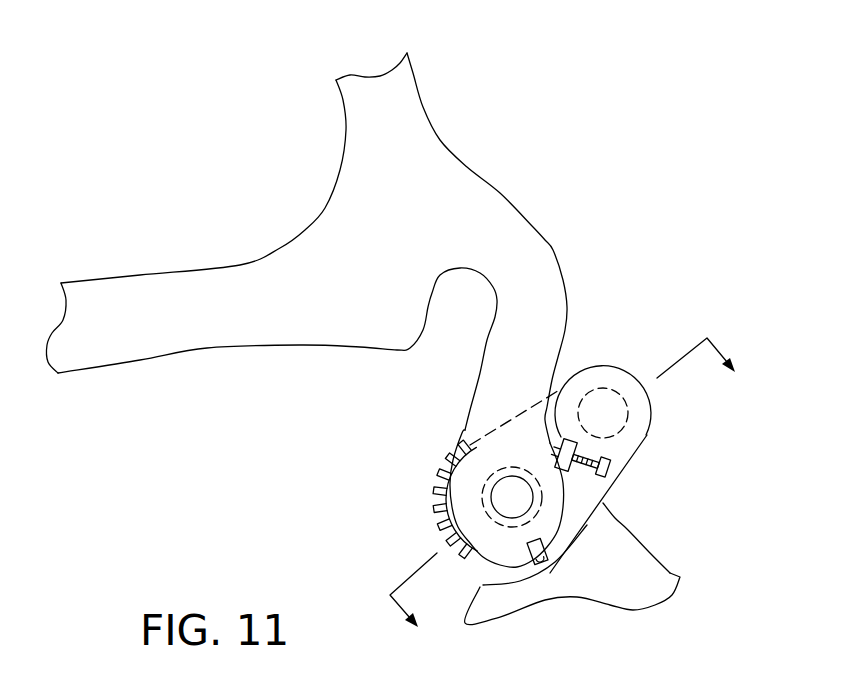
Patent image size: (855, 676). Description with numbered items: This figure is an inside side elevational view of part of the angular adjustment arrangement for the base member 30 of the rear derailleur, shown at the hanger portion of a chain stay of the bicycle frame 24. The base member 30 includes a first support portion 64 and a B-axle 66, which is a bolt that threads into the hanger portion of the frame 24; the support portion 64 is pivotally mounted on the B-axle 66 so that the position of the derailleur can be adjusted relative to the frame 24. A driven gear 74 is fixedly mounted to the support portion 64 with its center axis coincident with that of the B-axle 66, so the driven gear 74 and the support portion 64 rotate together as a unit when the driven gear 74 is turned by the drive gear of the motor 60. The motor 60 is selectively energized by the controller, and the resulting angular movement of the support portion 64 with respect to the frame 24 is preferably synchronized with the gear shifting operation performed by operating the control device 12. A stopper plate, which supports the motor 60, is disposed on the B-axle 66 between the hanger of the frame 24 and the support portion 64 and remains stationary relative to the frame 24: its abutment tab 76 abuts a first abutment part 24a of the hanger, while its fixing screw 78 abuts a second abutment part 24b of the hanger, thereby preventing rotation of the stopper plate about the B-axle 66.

The frame 24 is at (128, 264).
The first abutment part 24a is at (544, 562).
The second abutment part 24b is at (546, 384).
The base member 30 is at (682, 558).
The motor 60 is at (618, 390).
The support portion 64 is at (628, 530).
The B-axle 66 is at (512, 495).
The driven gear 74 is at (455, 445).
The abutment tab 76 is at (556, 548).
The fixing screw 78 is at (648, 434).
The control device 12 is at (575, 503).